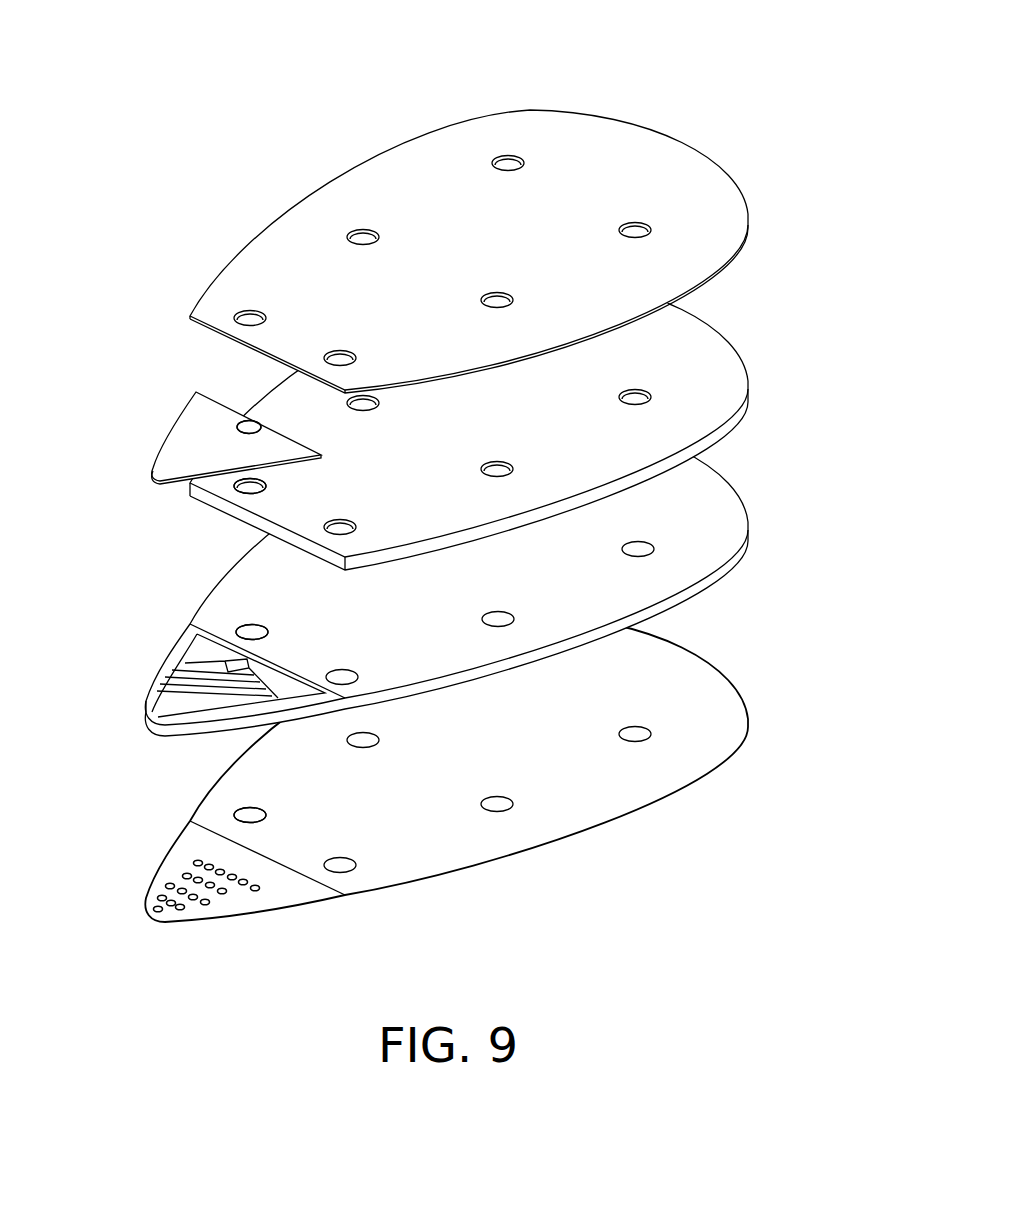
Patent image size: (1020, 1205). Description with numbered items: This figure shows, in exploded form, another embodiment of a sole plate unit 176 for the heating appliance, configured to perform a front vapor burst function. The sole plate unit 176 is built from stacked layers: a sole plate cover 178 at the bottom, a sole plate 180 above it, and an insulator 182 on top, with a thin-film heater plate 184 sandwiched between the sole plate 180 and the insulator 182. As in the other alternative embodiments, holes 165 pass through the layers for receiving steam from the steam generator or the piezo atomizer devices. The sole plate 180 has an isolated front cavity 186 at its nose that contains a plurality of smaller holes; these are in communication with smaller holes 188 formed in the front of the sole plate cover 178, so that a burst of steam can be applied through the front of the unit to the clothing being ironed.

The sole plate unit 176 is at (287, 79).
The sole plate cover 178 is at (722, 671).
The sole plate 180 is at (733, 488).
The insulator 182 is at (708, 160).
The thin-film heater plate 184 is at (716, 333).
The holes 165 is at (232, 418).
The isolated front cavity 186 is at (187, 679).
The smaller holes 188 is at (188, 877).